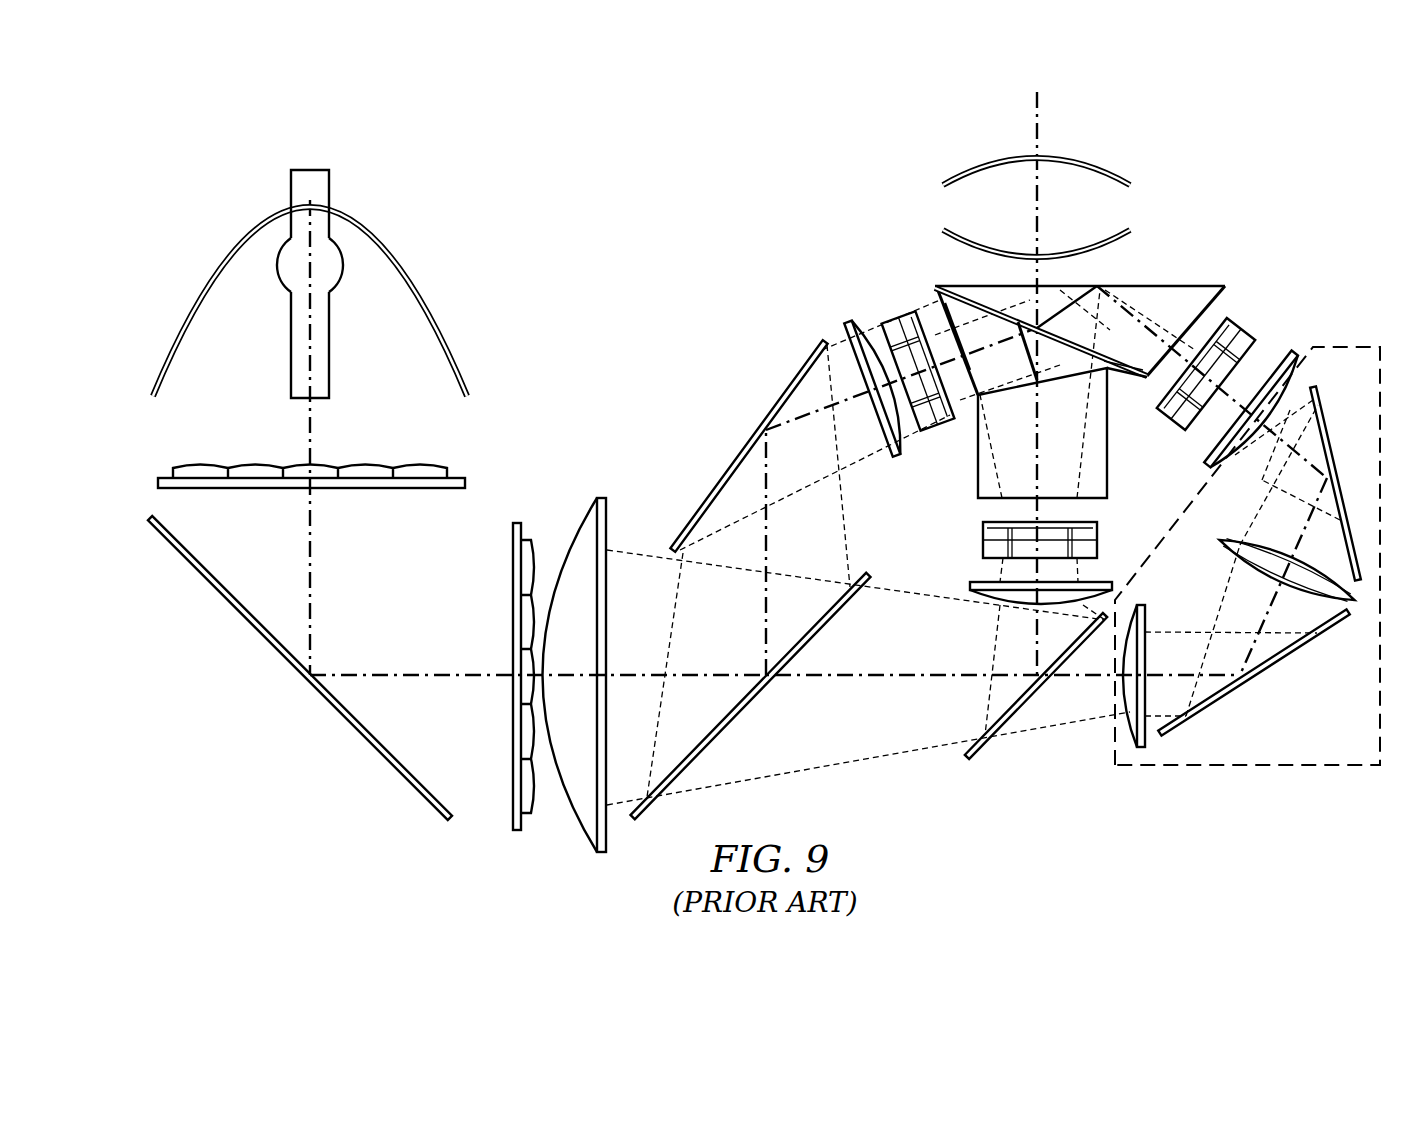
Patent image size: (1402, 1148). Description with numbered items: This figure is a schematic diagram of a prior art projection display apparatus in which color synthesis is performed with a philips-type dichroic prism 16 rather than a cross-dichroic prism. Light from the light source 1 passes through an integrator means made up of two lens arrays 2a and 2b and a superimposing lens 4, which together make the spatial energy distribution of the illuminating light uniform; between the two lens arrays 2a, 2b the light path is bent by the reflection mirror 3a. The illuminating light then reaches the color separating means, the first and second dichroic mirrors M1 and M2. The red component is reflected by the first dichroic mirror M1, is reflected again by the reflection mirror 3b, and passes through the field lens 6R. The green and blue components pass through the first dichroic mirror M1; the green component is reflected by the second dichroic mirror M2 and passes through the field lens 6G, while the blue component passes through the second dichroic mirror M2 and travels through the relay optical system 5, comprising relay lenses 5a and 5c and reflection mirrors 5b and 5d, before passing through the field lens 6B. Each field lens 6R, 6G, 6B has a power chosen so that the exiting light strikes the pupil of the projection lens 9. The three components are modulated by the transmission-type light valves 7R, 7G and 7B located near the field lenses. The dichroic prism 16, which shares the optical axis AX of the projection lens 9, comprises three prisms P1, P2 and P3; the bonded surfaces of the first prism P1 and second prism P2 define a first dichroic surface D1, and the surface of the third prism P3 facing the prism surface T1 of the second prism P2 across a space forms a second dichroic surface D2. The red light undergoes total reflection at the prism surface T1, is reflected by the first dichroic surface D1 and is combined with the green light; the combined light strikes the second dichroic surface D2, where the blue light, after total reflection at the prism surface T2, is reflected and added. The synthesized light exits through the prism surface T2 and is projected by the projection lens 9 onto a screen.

The light source 1 is at (205, 290).
The lens array 2a is at (255, 465).
The lens array 2b is at (517, 522).
The reflection mirror 3a is at (345, 723).
The reflection mirror 3b is at (722, 472).
The superimposing lens 4 is at (595, 496).
The relay optical system 5 is at (1247, 583).
The relay lens 5a is at (1143, 620).
The reflection mirror 5b is at (1230, 697).
The relay lens 5c is at (1352, 607).
The reflection mirror 5d is at (1327, 418).
The field lens 6R is at (847, 318).
The field lens 6G is at (967, 590).
The field lens 6B is at (1287, 350).
The transmission-type light valve 7R is at (890, 318).
The transmission-type light valve 7G is at (983, 548).
The transmission-type light valve 7B is at (1252, 337).
The projection lens 9 is at (1133, 205).
The dichroic prism 16 is at (1059, 351).
The optical axis AX is at (1040, 106).
The first dichroic surface D1 is at (1022, 390).
The second dichroic surface D2 is at (960, 283).
The prism surface T1 is at (937, 300).
The prism surface T2 is at (1142, 285).
The first prism P1 is at (1112, 477).
The second prism P2 is at (972, 376).
The third prism P3 is at (1122, 374).
The first dichroic mirror M1 is at (747, 707).
The second dichroic mirror M2 is at (980, 757).